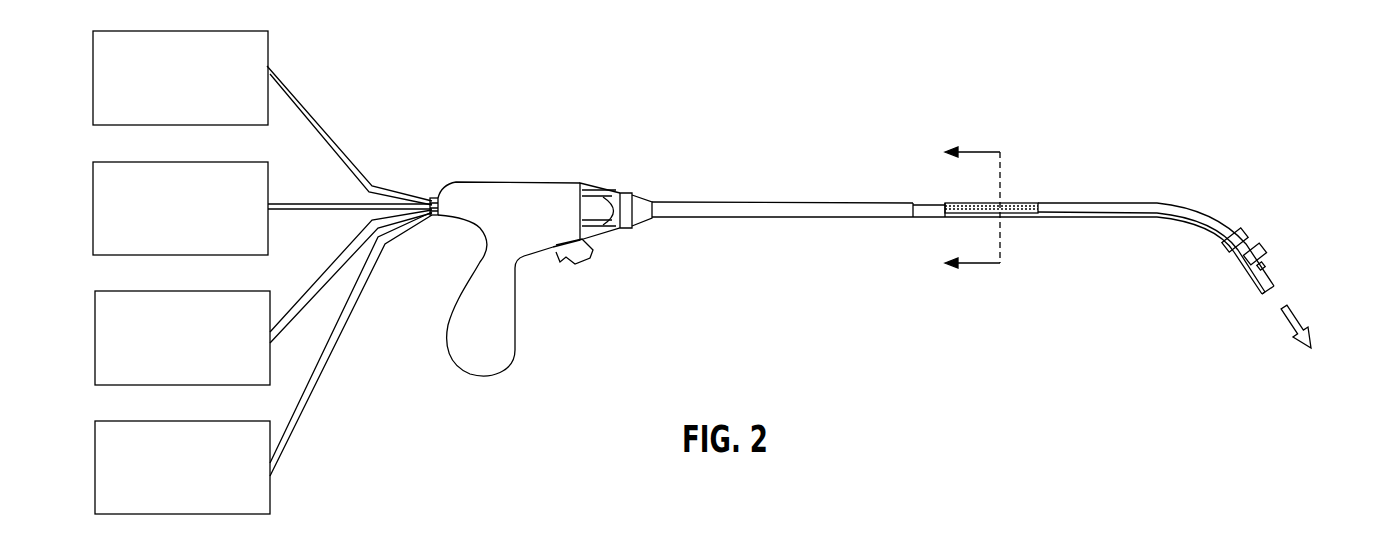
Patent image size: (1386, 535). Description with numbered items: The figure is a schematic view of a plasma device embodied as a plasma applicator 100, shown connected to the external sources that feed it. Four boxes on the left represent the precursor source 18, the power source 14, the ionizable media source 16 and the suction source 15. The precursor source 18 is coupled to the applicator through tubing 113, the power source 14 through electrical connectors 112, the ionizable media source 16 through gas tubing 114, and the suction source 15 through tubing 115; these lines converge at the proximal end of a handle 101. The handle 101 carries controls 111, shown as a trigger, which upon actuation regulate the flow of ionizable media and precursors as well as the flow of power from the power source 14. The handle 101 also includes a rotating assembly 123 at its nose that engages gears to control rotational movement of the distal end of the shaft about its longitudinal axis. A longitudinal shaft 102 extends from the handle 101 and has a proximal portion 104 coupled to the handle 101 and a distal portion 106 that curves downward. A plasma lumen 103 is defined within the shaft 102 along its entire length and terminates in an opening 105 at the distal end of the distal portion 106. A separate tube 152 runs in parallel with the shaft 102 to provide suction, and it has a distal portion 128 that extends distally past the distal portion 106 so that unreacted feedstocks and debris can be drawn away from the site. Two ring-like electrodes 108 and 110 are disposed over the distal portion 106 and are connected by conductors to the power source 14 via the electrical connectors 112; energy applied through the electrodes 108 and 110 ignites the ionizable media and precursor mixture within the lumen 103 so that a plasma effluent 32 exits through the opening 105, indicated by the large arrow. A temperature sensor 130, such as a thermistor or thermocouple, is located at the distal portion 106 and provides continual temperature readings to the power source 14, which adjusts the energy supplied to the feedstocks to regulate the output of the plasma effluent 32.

The plasma applicator 100 is at (1035, 72).
The precursor source 18 is at (93, 80).
The power source 14 is at (93, 208).
The ionizable media source 16 is at (95, 338).
The suction source 15 is at (95, 469).
The tubing 113 is at (324, 128).
The electrical connectors 112 is at (318, 205).
The gas tubing 114 is at (327, 283).
The tubing 115 is at (320, 372).
The handle 101 is at (500, 180).
The controls 111 is at (573, 268).
The rotating assembly 123 is at (598, 183).
The proximal portion 104 is at (697, 203).
The longitudinal shaft 102 is at (921, 186).
The plasma lumen 103 is at (1010, 203).
The tube 152 is at (1095, 218).
The distal portion 106 is at (1095, 203).
The electrode 108 is at (1237, 224).
The electrode 110 is at (1258, 246).
The temperature sensor 130 is at (1266, 262).
The opening 105 is at (1272, 277).
The distal portion 128 is at (1258, 285).
The plasma effluent 32 is at (1282, 322).